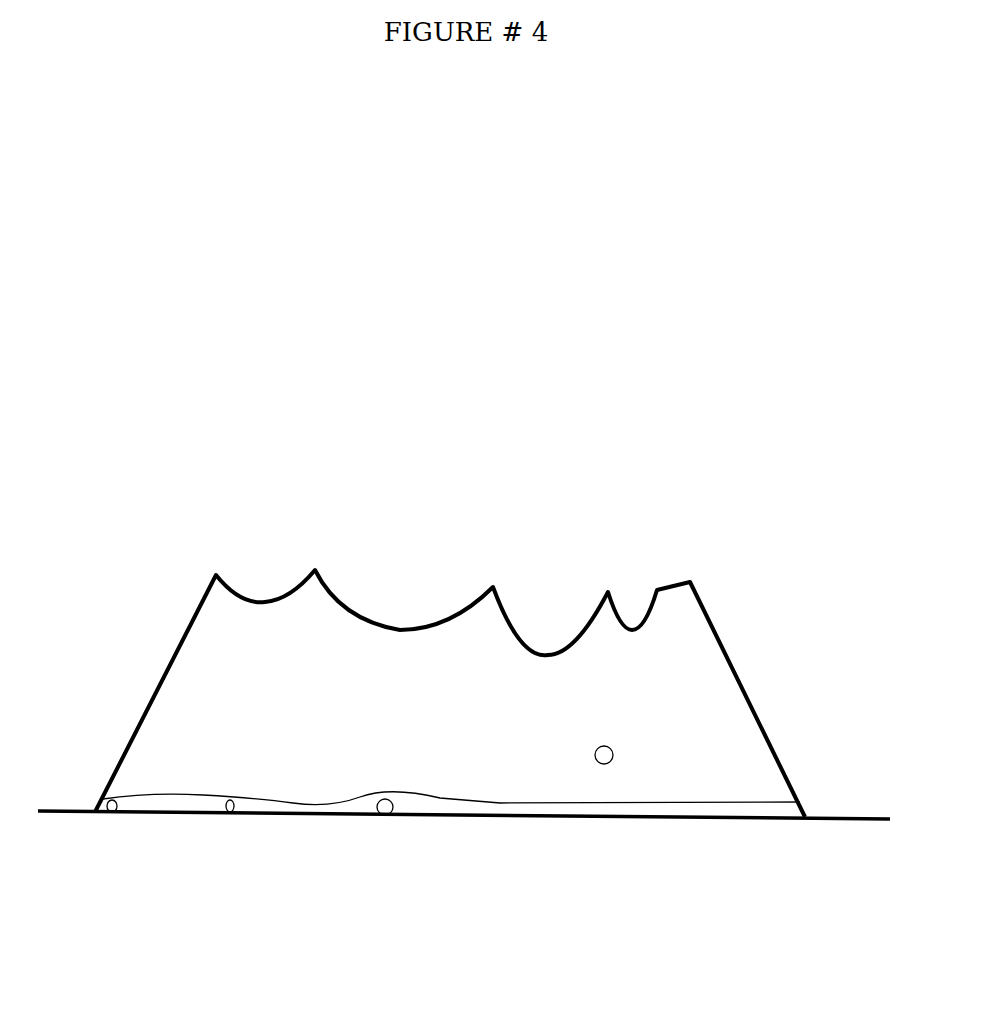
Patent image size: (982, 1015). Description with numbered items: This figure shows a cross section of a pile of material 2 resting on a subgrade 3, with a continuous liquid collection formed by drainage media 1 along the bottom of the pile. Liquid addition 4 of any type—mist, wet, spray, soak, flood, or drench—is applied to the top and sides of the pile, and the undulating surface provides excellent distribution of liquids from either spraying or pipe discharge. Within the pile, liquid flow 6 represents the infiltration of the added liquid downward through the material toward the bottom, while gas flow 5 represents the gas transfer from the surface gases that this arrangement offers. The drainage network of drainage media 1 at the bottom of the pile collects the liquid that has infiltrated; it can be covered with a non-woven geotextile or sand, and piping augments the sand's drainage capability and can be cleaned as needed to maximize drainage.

The drainage media 1 is at (153, 808).
The pile of material 2 is at (451, 780).
The subgrade 3 is at (460, 851).
The liquid addition 4 is at (171, 630).
The gas flow 5 is at (185, 757).
The liquid flow 6 is at (250, 757).